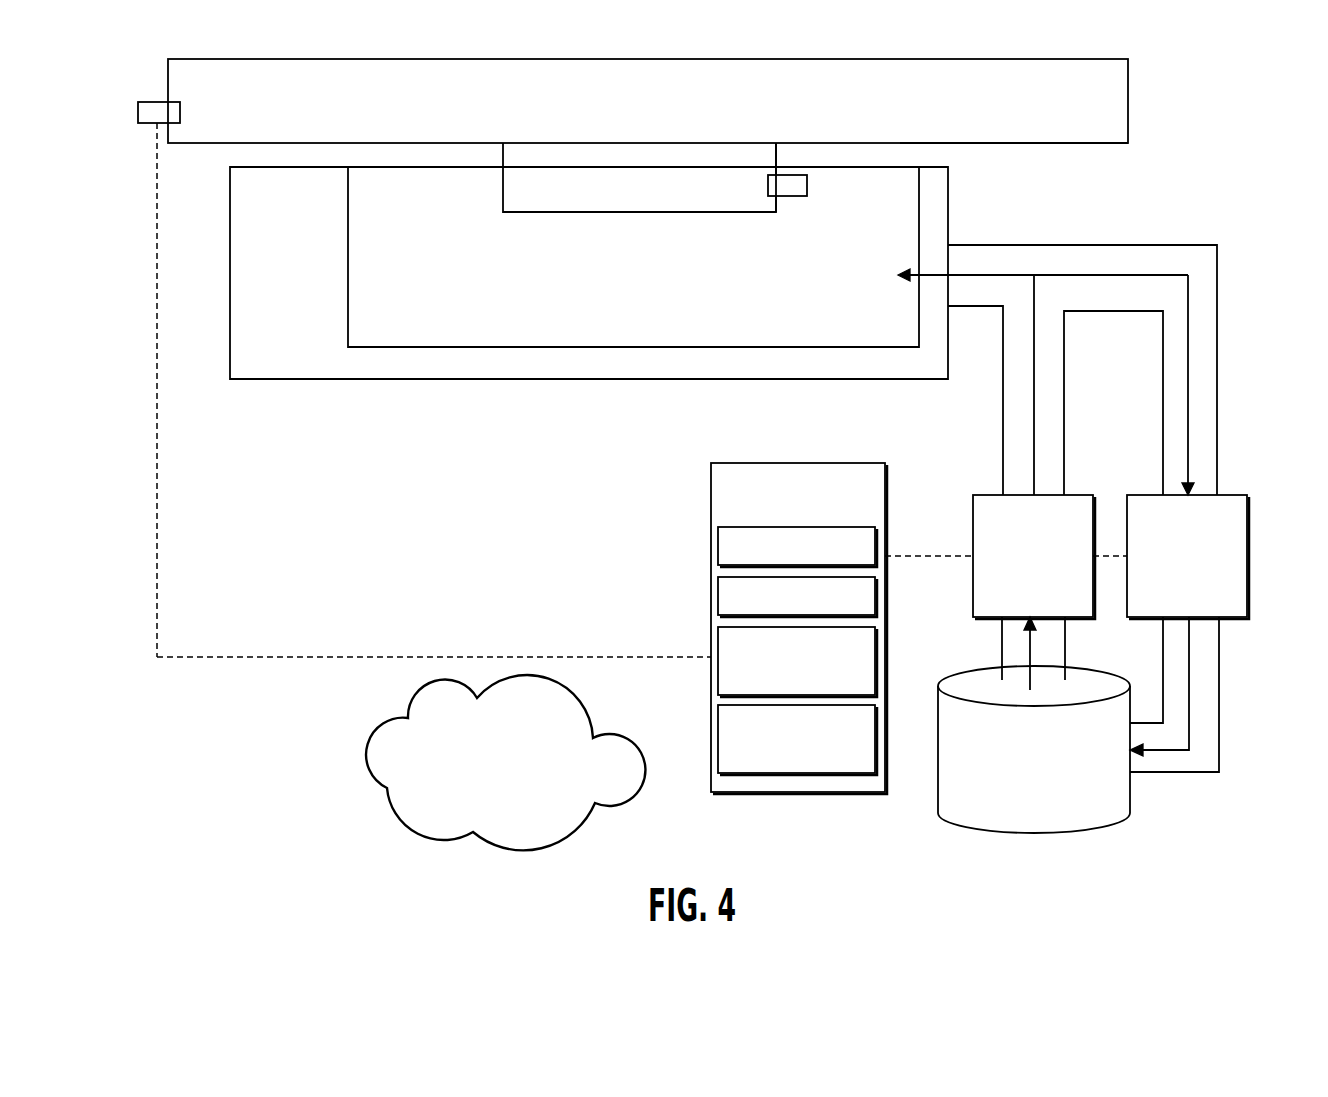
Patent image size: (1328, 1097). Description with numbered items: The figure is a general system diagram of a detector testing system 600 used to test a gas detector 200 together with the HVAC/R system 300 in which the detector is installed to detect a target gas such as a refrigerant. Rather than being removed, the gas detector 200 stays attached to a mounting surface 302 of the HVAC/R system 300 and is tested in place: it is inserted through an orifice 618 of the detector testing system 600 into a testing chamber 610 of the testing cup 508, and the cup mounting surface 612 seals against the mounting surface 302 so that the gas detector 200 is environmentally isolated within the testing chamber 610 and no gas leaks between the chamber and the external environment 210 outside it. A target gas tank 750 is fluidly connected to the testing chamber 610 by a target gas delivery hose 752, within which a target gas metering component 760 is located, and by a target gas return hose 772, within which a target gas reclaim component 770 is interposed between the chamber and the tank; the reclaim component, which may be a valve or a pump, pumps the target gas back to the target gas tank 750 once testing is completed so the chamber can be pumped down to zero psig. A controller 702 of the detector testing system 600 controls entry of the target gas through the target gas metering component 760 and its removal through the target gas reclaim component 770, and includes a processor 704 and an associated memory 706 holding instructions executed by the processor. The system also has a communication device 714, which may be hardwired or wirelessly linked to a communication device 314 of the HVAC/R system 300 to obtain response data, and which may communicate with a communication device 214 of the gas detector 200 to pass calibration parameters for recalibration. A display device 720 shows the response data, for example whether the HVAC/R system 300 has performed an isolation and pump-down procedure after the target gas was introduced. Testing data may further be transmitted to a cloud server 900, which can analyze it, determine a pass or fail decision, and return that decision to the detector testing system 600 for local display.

The HVAC/R system 300 is at (879, 68).
The mounting surface 302 is at (995, 143).
The communication device 314 is at (143, 113).
The cup mounting surface 612 is at (235, 167).
The orifice 618 is at (353, 170).
The communication device 214 is at (807, 186).
The gas detector 200 is at (777, 203).
The testing chamber 610 is at (523, 305).
The external environment 210 is at (495, 473).
The enclosure wall 508 is at (895, 367).
The controller 702 is at (829, 628).
The memory 706 is at (862, 545).
The processor 704 is at (862, 597).
The communication device 714 is at (870, 660).
The display device 720 is at (875, 738).
The target gas delivery hose 752 is at (1064, 400).
The target gas return hose 772 is at (1217, 370).
The target gas metering component 760 is at (1093, 612).
The target gas reclaim component 770 is at (1247, 612).
The target gas tank 750 is at (1115, 793).
The detector testing system 600 is at (1242, 772).
The cloud server 900 is at (370, 740).